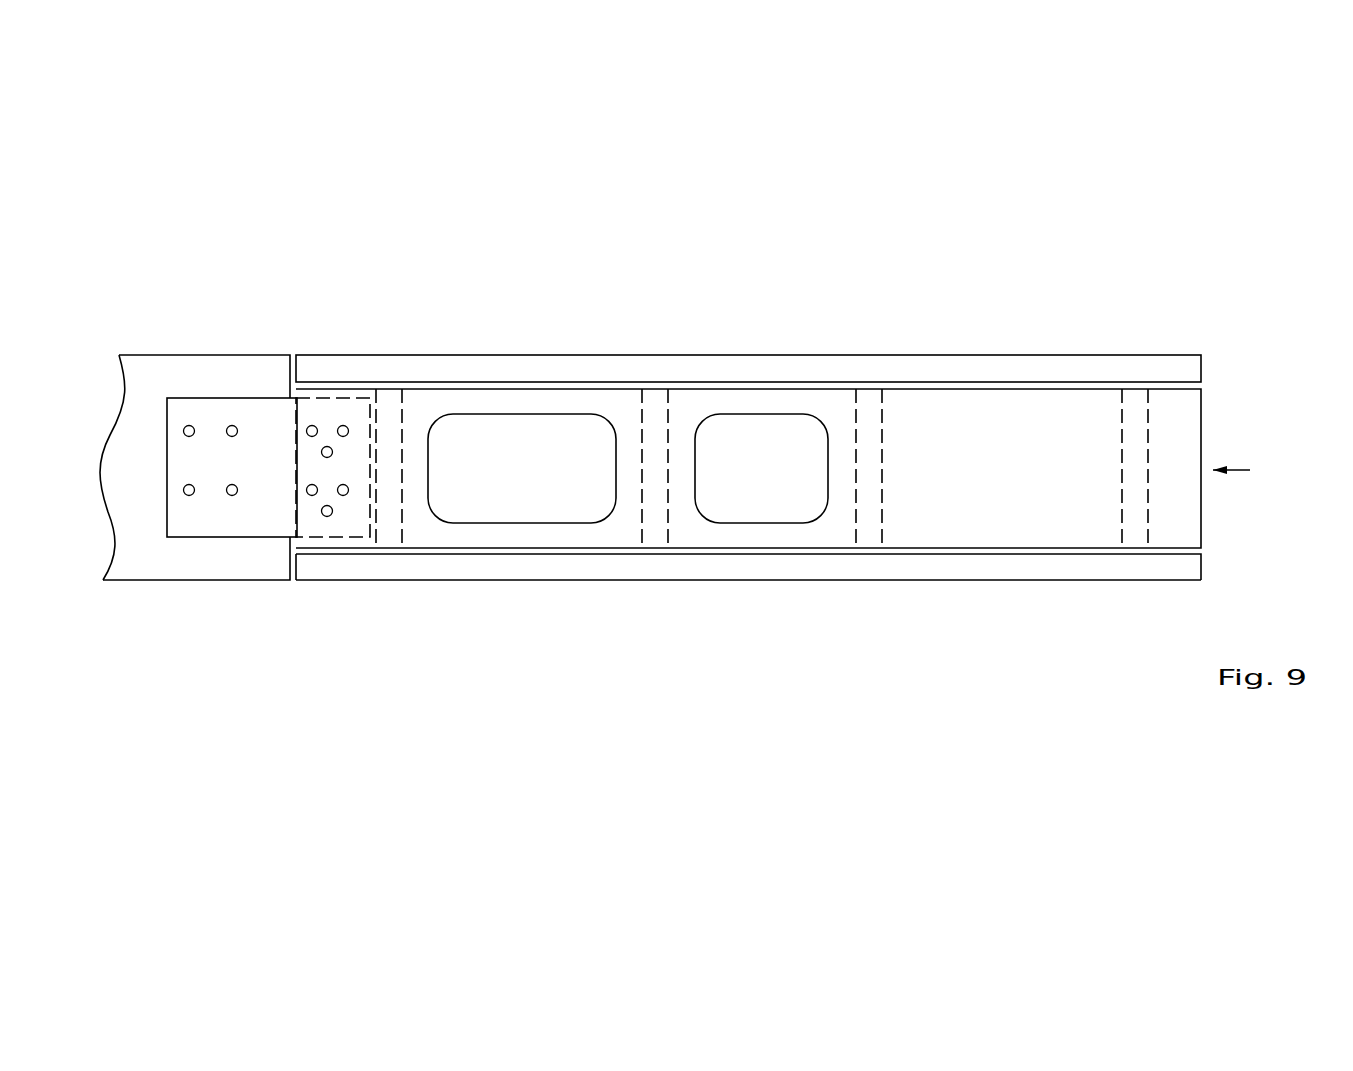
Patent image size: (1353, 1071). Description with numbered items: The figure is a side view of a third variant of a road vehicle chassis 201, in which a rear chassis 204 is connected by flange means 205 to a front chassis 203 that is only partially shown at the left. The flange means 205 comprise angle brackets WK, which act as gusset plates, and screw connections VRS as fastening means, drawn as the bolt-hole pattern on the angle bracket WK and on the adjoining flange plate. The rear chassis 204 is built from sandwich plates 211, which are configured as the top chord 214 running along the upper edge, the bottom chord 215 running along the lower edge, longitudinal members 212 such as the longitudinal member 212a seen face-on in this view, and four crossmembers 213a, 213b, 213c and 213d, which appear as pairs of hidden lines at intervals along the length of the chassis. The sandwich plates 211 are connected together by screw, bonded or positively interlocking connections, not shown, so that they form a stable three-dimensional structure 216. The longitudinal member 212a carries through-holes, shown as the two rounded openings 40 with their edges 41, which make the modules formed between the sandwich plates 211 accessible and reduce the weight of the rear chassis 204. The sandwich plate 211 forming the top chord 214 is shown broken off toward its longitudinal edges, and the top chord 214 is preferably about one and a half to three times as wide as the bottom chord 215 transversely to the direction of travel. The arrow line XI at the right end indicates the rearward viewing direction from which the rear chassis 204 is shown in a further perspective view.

The road vehicle chassis 201 is at (754, 457).
The front chassis 203 is at (222, 332).
The rear chassis 204 is at (373, 418).
The flange means 205 is at (265, 427).
The sandwich plates 211 is at (754, 503).
The longitudinal members 212 is at (748, 337).
The longitudinal member 212a is at (1013, 443).
The crossmember 213a is at (383, 433).
The crossmember 213b is at (654, 422).
The crossmember 213c is at (867, 422).
The rear crossmember 213d is at (1132, 422).
The top chord 214 is at (748, 368).
The bottom chord 215 is at (617, 565).
The three-dimensional structure 216 is at (460, 618).
The web opening 40 is at (628, 605).
The opening edge 41 is at (521, 467).
The screw connections VRS is at (188, 497).
The angle brackets WK is at (237, 515).
The arrow line XI is at (1237, 470).